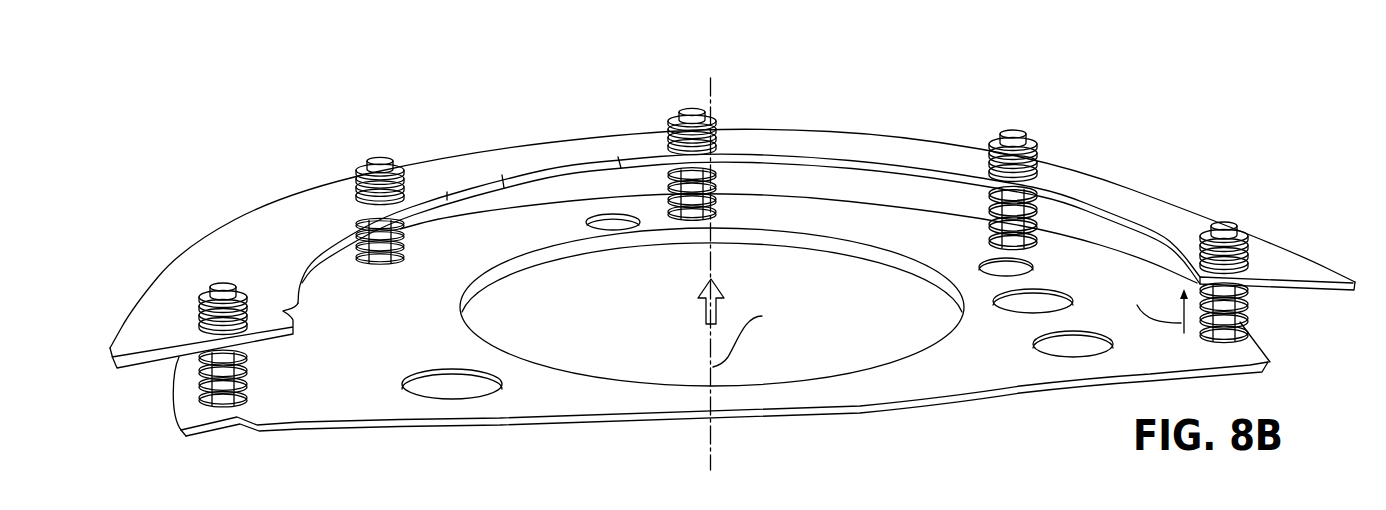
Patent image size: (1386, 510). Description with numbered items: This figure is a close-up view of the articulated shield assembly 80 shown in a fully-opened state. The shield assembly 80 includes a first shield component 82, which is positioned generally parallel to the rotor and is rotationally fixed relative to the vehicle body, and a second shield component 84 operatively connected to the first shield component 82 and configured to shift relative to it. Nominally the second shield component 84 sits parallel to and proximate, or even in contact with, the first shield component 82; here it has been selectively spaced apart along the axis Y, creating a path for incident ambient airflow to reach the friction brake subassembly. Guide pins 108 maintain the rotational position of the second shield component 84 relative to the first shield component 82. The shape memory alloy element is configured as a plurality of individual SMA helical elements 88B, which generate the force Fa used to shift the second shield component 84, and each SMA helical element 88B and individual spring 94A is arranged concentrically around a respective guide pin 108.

The shield assembly 80 is at (1097, 137).
The first shield component 82 is at (397, 413).
The second shield component 84 is at (307, 203).
The SMA helical element 88B is at (1248, 304).
The spring 94A is at (1247, 250).
The guide pin 108 is at (227, 284).